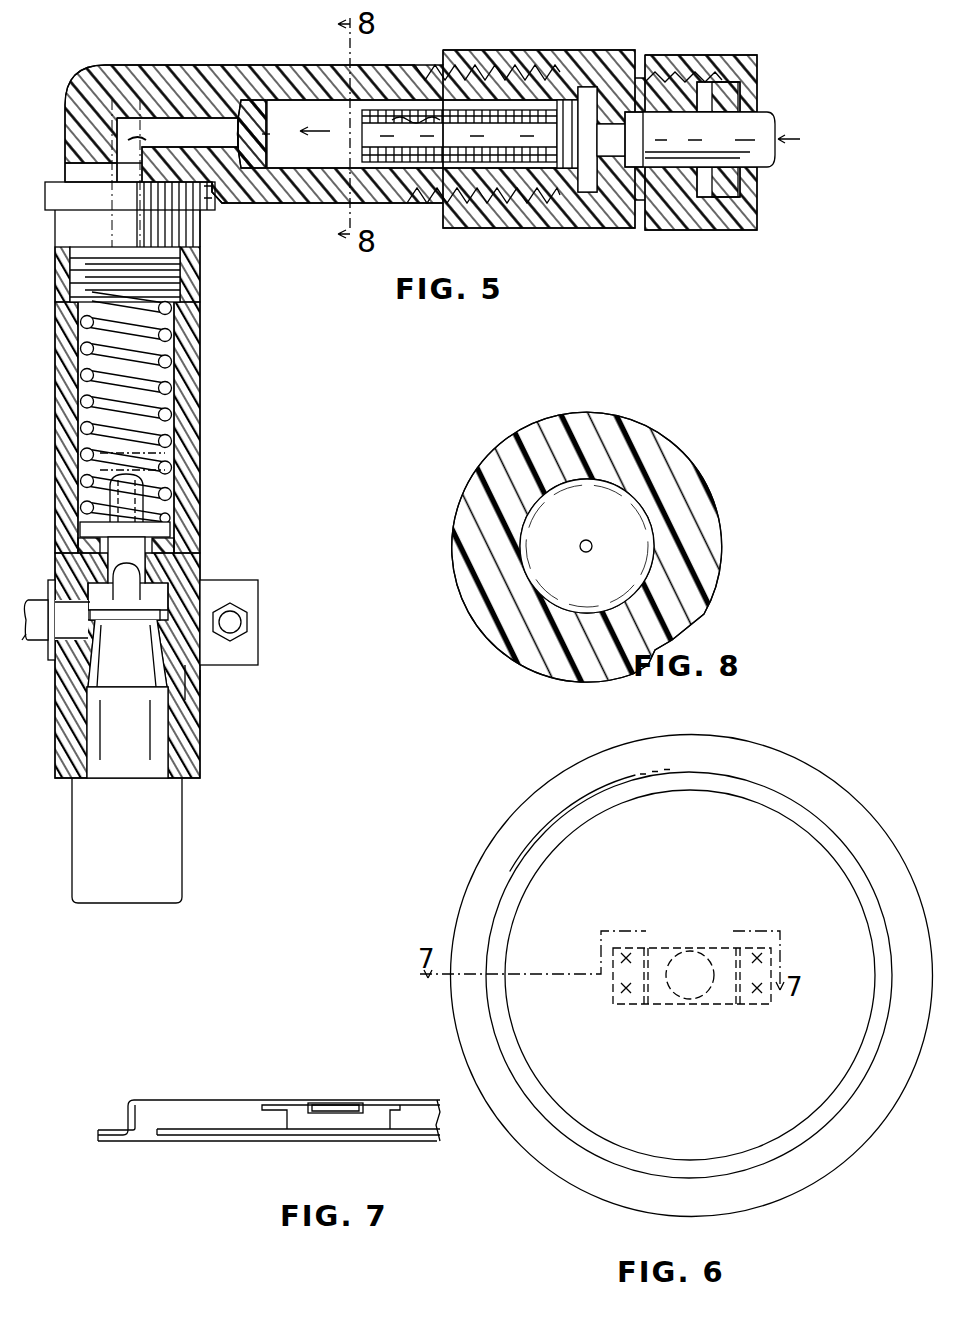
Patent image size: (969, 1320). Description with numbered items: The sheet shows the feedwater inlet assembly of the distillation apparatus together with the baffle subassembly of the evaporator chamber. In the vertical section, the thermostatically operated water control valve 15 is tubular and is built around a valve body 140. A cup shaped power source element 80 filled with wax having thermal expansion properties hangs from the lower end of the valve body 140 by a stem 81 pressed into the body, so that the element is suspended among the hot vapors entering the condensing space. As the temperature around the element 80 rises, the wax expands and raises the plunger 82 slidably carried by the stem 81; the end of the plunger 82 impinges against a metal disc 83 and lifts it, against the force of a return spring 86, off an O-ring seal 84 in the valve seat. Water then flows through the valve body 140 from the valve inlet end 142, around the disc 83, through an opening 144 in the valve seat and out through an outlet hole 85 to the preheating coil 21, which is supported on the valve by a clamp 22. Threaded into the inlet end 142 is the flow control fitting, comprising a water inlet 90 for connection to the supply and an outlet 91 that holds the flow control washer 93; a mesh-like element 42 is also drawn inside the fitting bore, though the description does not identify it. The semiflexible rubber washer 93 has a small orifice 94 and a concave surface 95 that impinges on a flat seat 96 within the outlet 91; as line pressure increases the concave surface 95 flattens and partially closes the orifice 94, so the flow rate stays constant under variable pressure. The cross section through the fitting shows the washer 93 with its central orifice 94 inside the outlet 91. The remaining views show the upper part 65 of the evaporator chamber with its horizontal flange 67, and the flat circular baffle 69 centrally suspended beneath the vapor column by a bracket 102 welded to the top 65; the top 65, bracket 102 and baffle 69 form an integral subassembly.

In FIG. 5, the water control valve 15 is at (211, 390).
In FIG. 5, the preheating coil 21 is at (36, 648).
In FIG. 5, the clamp 22 is at (248, 649).
In FIG. 5, the filter screen 42 is at (362, 150).
In FIG. 6, the upper part 65 is at (737, 790).
In FIG. 7, the upper part 65 is at (188, 1100).
In FIG. 6, the horizontal flange 67 is at (868, 829).
In FIG. 7, the horizontal flange 67 is at (110, 1137).
In FIG. 6, the flat circular baffle 69 is at (761, 1146).
In FIG. 7, the flat circular baffle 69 is at (205, 1141).
In FIG. 5, the power source element 80 is at (172, 832).
In FIG. 5, the stem 81 is at (170, 726).
In FIG. 5, the plunger 82 is at (161, 488).
In FIG. 5, the metal disc 83 is at (167, 457).
In FIG. 5, the O-ring seal 84 is at (172, 548).
In FIG. 5, the outlet hole 85 is at (66, 595).
In FIG. 5, the return spring 86 is at (172, 333).
In FIG. 5, the water inlet 90 is at (677, 73).
In FIG. 5, the outlet 91 is at (155, 117).
In FIG. 8, the outlet 91 is at (627, 432).
In FIG. 5, the flow control washer 93 is at (241, 126).
In FIG. 8, the flow control washer 93 is at (624, 500).
In FIG. 5, the orifice 94 is at (274, 133).
In FIG. 8, the orifice 94 is at (594, 545).
In FIG. 5, the concave surface 95 is at (225, 118).
In FIG. 5, the flat seat 96 is at (220, 197).
In FIG. 6, the bracket 102 is at (630, 1008).
In FIG. 7, the bracket 102 is at (392, 1118).
In FIG. 5, the valve body 140 is at (192, 678).
In FIG. 5, the valve inlet end 142 is at (182, 272).
In FIG. 5, the opening 144 is at (145, 578).